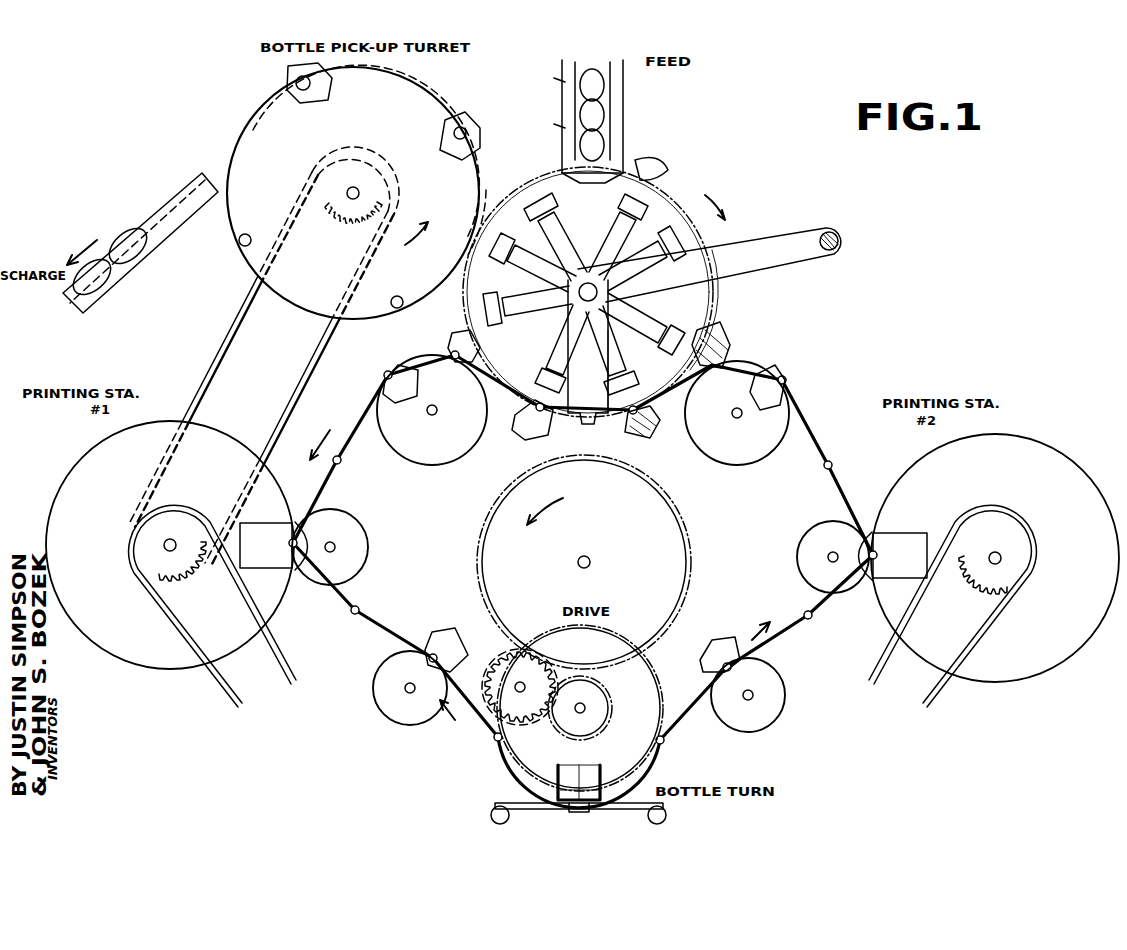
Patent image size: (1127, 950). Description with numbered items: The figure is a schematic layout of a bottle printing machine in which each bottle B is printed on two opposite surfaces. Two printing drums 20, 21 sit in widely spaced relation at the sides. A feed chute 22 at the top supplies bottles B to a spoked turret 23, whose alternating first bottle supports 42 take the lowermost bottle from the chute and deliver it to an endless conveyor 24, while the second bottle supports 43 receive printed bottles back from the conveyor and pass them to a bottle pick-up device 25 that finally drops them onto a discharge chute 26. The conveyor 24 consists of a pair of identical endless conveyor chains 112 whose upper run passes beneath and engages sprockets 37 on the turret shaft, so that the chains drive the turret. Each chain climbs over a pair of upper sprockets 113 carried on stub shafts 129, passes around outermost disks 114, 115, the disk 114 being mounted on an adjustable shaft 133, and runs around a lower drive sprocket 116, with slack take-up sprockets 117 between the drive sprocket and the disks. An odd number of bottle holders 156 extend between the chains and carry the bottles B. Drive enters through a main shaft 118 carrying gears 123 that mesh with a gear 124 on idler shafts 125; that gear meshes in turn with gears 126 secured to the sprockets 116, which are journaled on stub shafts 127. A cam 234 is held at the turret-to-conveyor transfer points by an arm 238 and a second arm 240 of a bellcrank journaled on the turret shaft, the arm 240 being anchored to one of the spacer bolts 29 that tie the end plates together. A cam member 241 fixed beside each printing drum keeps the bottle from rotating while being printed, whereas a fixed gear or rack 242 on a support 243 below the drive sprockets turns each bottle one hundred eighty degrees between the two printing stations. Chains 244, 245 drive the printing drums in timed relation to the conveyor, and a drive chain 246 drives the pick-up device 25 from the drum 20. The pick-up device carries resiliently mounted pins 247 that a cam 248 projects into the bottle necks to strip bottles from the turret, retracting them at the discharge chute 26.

The printing drum 20 is at (100, 448).
The printing drum 21 is at (1048, 458).
The feed chute 22 is at (628, 108).
The turret 23 is at (716, 232).
The endless conveyor 24 is at (810, 410).
The bottle pick-up device 25 is at (440, 92).
The discharge chute 26 is at (168, 240).
The spacer bolts 29 is at (842, 240).
The sprockets 37 is at (722, 296).
The first bottle supports 42 is at (495, 240).
The second bottle supports 43 is at (560, 210).
The conveyor chains 112 is at (842, 488).
The upper sprockets 113 is at (435, 465).
The outermost disk 114 is at (360, 546).
The outermost disk 115 is at (805, 555).
The lower drive sprocket 116 is at (650, 672).
The slack take-up sprockets 117 is at (415, 725).
The main shaft 118 is at (590, 560).
The gears 123 is at (690, 560).
The gear 124 is at (490, 662).
The idler shafts 125 is at (522, 700).
The gears 126 is at (592, 694).
The stub shafts 127 is at (590, 712).
The stub shafts 129 is at (432, 416).
The shaft 133 is at (336, 542).
The bottle holders 156 is at (345, 464).
The cam 234 is at (612, 420).
The arm 238 is at (598, 352).
The second arm 240 is at (790, 235).
The cam member 241 is at (262, 520).
The fixed gear or rack 242 is at (558, 795).
The support 243 is at (590, 810).
The chain 244 is at (282, 642).
The chain 245 is at (940, 694).
The drive chain 246 is at (330, 345).
The pins or plungers 247 is at (308, 90).
The cam 248 is at (484, 194).
The bottle B is at (125, 238).